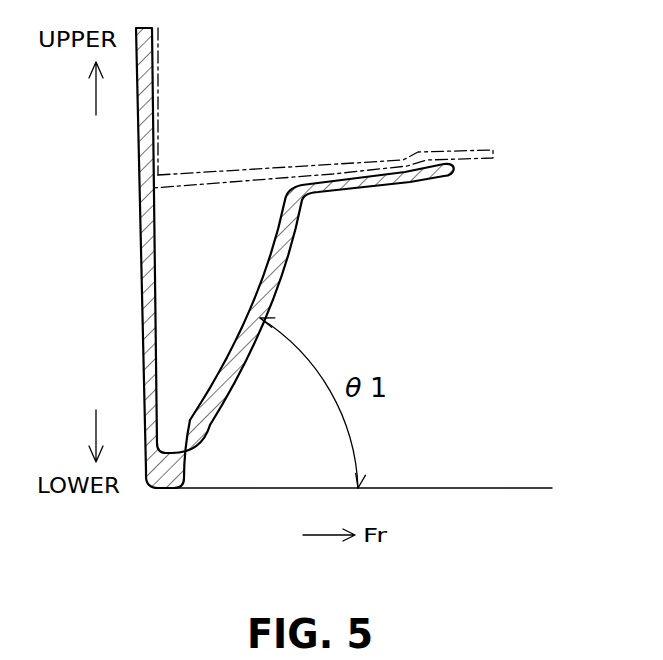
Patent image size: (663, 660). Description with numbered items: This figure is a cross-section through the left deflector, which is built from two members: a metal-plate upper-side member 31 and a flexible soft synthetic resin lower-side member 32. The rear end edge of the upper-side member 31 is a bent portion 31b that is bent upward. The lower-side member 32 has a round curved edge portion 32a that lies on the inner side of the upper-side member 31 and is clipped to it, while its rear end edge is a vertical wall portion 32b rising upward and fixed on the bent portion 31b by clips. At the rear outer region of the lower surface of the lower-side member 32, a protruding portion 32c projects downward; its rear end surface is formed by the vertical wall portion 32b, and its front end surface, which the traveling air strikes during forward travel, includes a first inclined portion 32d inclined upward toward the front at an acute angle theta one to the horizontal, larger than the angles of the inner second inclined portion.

The upper-side member 31 is at (302, 166).
The bent portion 31b is at (156, 105).
The lower-side member 32 is at (285, 250).
The curved edge portion 32a is at (410, 184).
The vertical wall portion 32b is at (141, 251).
The protruding portion 32c is at (163, 490).
The first inclined portion 32d is at (272, 284).